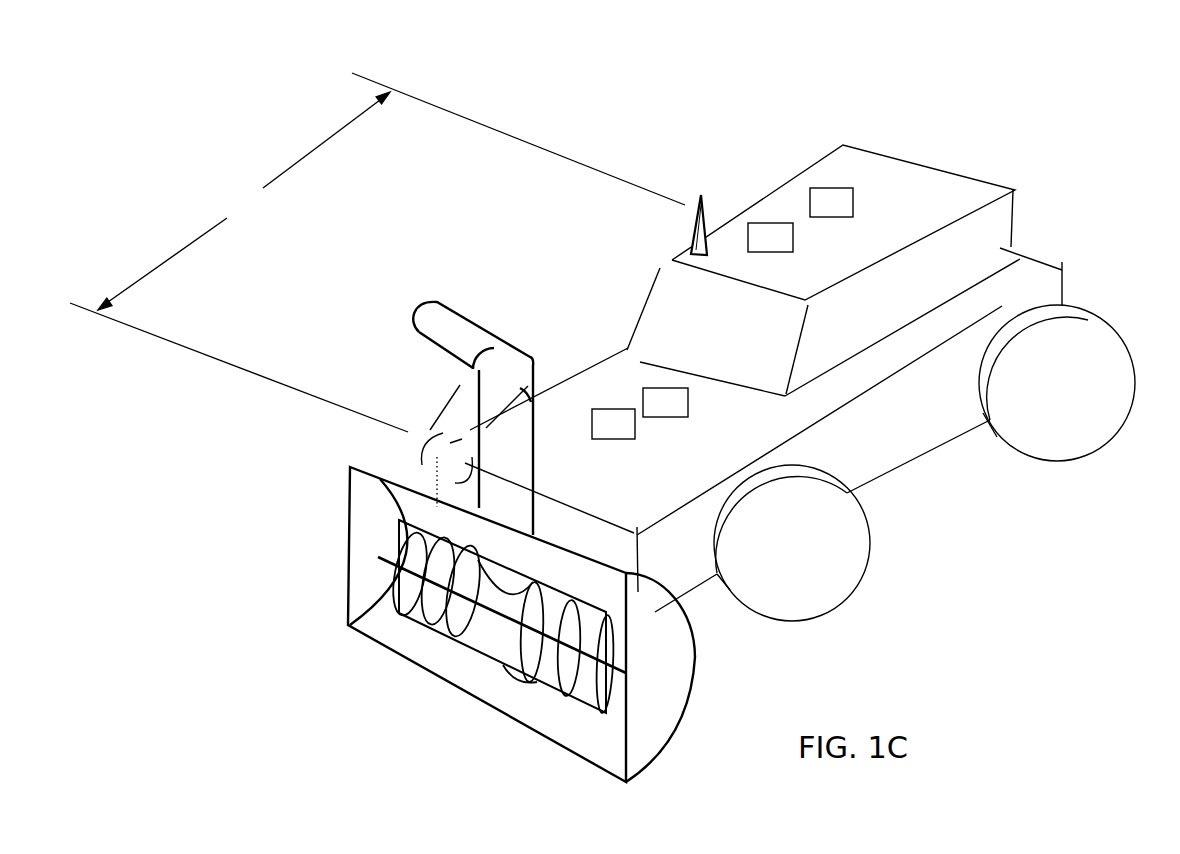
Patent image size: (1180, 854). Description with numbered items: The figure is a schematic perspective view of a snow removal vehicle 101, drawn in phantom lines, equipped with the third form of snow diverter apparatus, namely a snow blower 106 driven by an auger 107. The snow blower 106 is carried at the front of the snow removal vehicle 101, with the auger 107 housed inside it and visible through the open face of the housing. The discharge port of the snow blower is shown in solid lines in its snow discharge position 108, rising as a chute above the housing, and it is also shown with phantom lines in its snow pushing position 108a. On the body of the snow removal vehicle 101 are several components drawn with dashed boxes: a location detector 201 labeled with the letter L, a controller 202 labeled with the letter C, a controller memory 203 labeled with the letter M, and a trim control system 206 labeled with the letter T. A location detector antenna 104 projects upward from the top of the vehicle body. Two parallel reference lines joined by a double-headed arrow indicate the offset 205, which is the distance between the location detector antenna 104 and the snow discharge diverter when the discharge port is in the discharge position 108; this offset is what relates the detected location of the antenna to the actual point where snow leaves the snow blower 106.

The snow removal vehicle 101 is at (925, 452).
The location detector antenna 104 is at (697, 205).
The snow blower 106 is at (380, 553).
The auger 107 is at (466, 630).
The discharge port in snow discharge position 108 is at (420, 302).
The discharge port in snow pushing position 108a is at (440, 402).
The location detector 201 is at (817, 188).
The controller 202 is at (603, 407).
The controller memory 203 is at (653, 388).
The offset 205 is at (220, 190).
The trim control system 206 is at (760, 222).